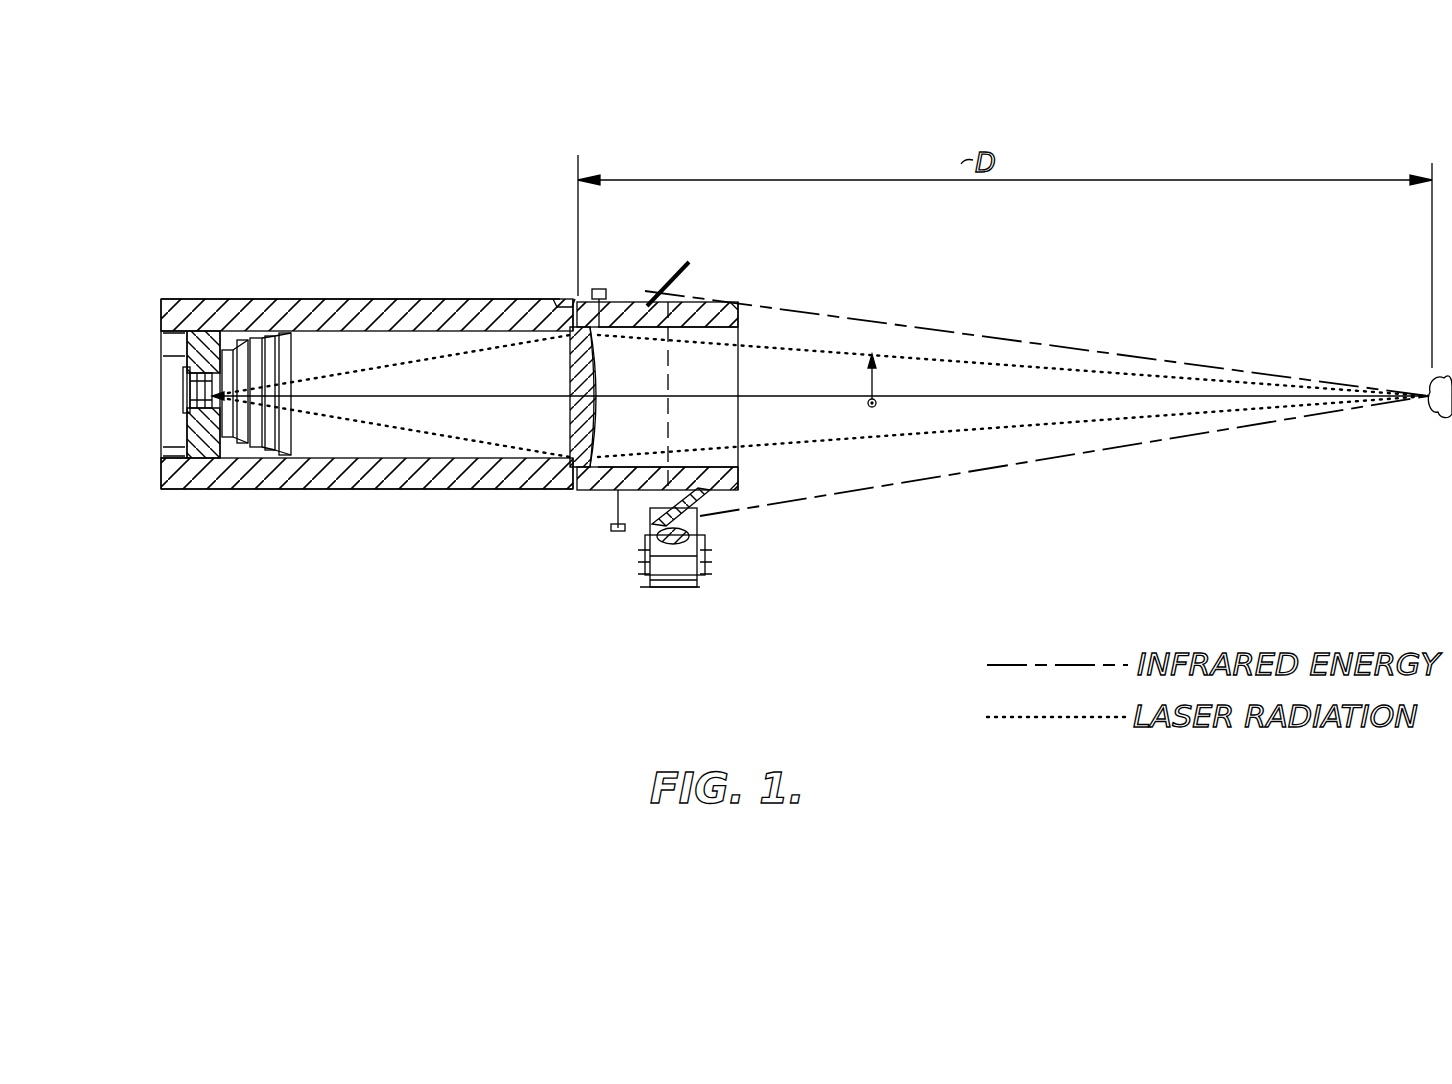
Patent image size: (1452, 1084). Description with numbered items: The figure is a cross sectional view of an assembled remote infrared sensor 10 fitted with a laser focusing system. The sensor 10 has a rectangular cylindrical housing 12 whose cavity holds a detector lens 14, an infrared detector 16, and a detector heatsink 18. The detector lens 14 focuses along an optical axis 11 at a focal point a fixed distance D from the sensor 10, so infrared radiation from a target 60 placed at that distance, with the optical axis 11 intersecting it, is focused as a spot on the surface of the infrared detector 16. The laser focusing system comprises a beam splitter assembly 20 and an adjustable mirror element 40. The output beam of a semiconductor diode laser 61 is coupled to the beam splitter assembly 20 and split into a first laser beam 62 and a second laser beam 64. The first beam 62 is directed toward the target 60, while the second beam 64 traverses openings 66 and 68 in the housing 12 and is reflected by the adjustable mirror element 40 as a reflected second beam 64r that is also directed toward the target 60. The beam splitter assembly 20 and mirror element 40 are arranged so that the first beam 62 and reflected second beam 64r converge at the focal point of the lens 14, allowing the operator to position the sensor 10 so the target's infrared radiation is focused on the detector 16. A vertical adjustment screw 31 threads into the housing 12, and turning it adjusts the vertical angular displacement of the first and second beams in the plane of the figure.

The remote infrared sensor 10 is at (342, 262).
The optical axis 11 is at (802, 396).
The housing 12 is at (265, 300).
The detector lens 14 is at (570, 412).
The infrared detector 16 is at (197, 384).
The detector heatsink 18 is at (195, 437).
The beam splitter assembly 20 is at (677, 582).
The vertical adjustment screw 31 is at (612, 524).
The adjustable mirror element 40 is at (662, 300).
The target 60 is at (1434, 412).
The semiconductor diode laser 61 is at (656, 572).
The first laser beam 62 is at (950, 470).
The second laser beam 64 is at (665, 430).
The reflected second beam 64r is at (918, 324).
The opening 66 is at (712, 492).
The opening 68 is at (718, 300).